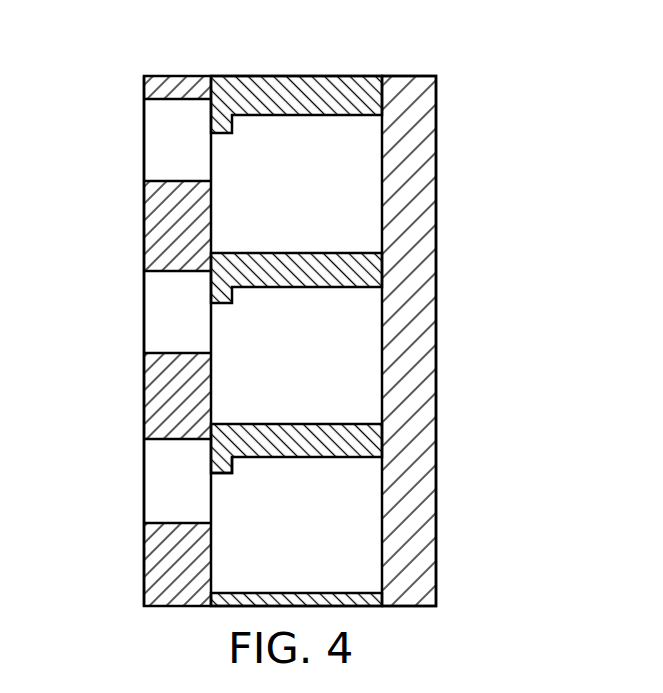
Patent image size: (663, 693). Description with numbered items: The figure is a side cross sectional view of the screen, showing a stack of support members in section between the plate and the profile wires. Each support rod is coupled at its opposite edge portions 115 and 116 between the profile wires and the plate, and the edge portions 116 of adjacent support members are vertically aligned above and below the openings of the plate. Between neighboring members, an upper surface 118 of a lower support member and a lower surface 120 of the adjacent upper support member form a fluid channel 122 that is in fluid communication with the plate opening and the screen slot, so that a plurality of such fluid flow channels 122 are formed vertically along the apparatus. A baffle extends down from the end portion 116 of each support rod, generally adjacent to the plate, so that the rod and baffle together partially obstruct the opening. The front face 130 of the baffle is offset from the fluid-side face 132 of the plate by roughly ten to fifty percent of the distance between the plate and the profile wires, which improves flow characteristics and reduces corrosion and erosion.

The edge portion 115 is at (357, 60).
The edge portion 116 is at (238, 76).
The upper surface 118 is at (352, 424).
The lower surface 120 is at (353, 287).
The fluid channel 122 is at (367, 187).
The front face 130 is at (211, 459).
The fluid-side face 132 is at (144, 561).